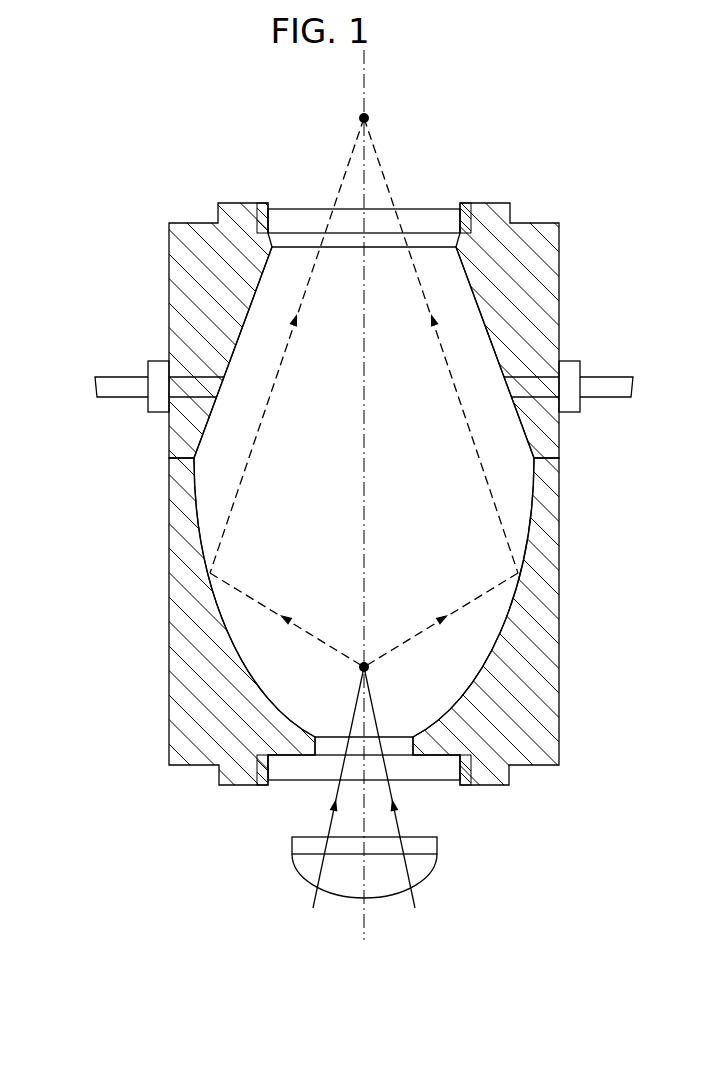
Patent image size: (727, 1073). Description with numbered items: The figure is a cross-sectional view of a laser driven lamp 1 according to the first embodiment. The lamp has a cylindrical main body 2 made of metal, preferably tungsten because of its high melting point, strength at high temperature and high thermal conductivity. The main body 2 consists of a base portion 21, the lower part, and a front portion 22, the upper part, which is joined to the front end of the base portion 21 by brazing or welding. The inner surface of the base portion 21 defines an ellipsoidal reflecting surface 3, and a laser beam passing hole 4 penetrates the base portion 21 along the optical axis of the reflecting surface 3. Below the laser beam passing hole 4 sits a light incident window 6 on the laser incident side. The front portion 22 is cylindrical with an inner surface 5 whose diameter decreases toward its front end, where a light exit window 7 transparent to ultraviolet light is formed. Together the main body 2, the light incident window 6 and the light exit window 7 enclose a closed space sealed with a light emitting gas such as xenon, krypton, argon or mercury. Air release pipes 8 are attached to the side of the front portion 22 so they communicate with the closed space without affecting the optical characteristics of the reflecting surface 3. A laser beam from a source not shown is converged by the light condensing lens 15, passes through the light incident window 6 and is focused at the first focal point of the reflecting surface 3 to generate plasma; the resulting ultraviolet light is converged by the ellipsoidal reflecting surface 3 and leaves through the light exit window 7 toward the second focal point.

The laser driven lamp 1 is at (203, 123).
The main body 2 is at (66, 443).
The base portion 21 is at (183, 517).
The front portion 22 is at (180, 433).
The ellipsoidal reflecting surface 3 is at (245, 667).
The laser beam passing hole 4 is at (393, 737).
The inner surface 5 is at (235, 352).
The light incident window 6 is at (442, 772).
The light exit window 7 is at (428, 208).
The air release pipes 8 is at (120, 377).
The light condensing lens 15 is at (295, 867).